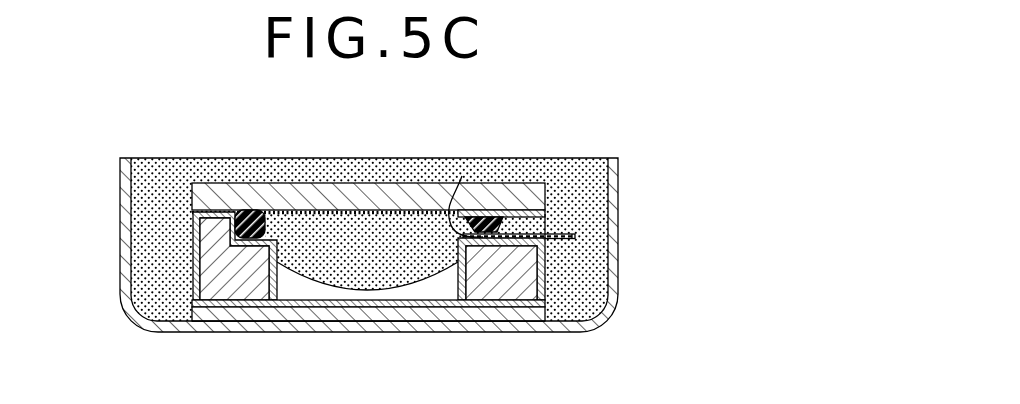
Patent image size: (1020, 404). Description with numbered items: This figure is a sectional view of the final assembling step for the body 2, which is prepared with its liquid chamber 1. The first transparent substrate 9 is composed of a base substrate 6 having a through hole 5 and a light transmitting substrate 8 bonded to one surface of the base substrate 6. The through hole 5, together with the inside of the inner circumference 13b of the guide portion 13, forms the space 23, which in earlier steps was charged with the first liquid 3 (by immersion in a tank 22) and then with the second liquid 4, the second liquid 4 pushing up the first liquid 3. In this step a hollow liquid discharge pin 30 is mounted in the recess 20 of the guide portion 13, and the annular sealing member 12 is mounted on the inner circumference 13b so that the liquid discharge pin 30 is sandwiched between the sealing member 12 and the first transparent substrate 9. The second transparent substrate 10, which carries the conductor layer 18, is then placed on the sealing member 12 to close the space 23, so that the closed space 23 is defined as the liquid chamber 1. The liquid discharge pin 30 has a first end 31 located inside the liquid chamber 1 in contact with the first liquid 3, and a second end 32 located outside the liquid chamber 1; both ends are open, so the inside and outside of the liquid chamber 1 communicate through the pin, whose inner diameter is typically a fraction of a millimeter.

The liquid chamber 1 is at (371, 248).
The body 2 is at (252, 172).
The first liquid 3 is at (383, 225).
The second liquid 4 is at (418, 287).
The through hole 5 is at (280, 282).
The base substrate 6 is at (497, 287).
The light transmitting substrate 8 is at (467, 317).
The first transparent substrate 9 is at (265, 319).
The second transparent substrate 10 is at (415, 200).
The sealing member 12 is at (498, 210).
The guide portion 13 is at (200, 243).
The inner circumference 13b is at (247, 217).
The conductor layer 18 is at (548, 224).
The recess 20 is at (547, 227).
The tank 22 is at (614, 173).
The space 23 is at (305, 255).
The hollow liquid discharge pin 30 is at (563, 230).
The first end 31 is at (462, 176).
The second end 32 is at (575, 238).